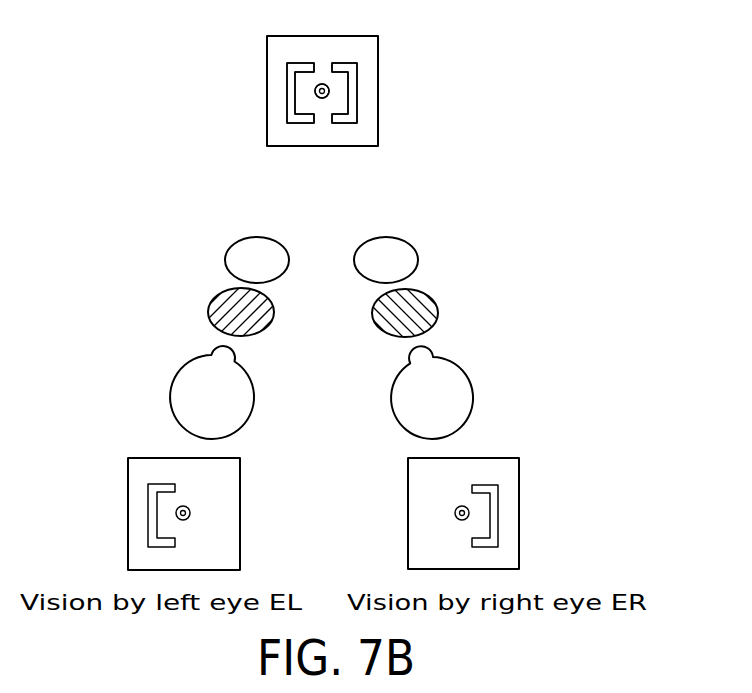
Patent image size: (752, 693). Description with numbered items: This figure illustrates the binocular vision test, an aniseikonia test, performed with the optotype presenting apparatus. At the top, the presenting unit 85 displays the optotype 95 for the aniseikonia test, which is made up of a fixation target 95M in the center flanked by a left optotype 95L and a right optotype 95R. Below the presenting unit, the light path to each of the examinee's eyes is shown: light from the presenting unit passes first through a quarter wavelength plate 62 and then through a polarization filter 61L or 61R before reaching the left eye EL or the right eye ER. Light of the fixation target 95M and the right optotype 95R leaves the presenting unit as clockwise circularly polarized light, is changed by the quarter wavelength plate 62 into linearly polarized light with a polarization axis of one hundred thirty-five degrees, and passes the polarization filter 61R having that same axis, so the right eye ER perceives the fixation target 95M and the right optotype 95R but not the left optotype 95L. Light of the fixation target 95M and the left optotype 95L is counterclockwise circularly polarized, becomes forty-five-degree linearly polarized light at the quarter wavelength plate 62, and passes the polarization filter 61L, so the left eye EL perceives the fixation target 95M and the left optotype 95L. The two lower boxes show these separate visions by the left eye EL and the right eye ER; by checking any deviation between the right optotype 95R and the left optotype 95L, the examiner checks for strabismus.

The presenting unit 85 is at (378, 58).
The optotype 95 is at (363, 104).
The fixation target 95M is at (317, 87).
The left optotype 95L is at (287, 108).
The right optotype 95R is at (351, 123).
The quarter wavelength plate 62 is at (233, 245).
The polarization filter 61L is at (212, 302).
The polarization filter 61R is at (438, 308).
The left eye EL is at (180, 392).
The right eye ER is at (463, 392).